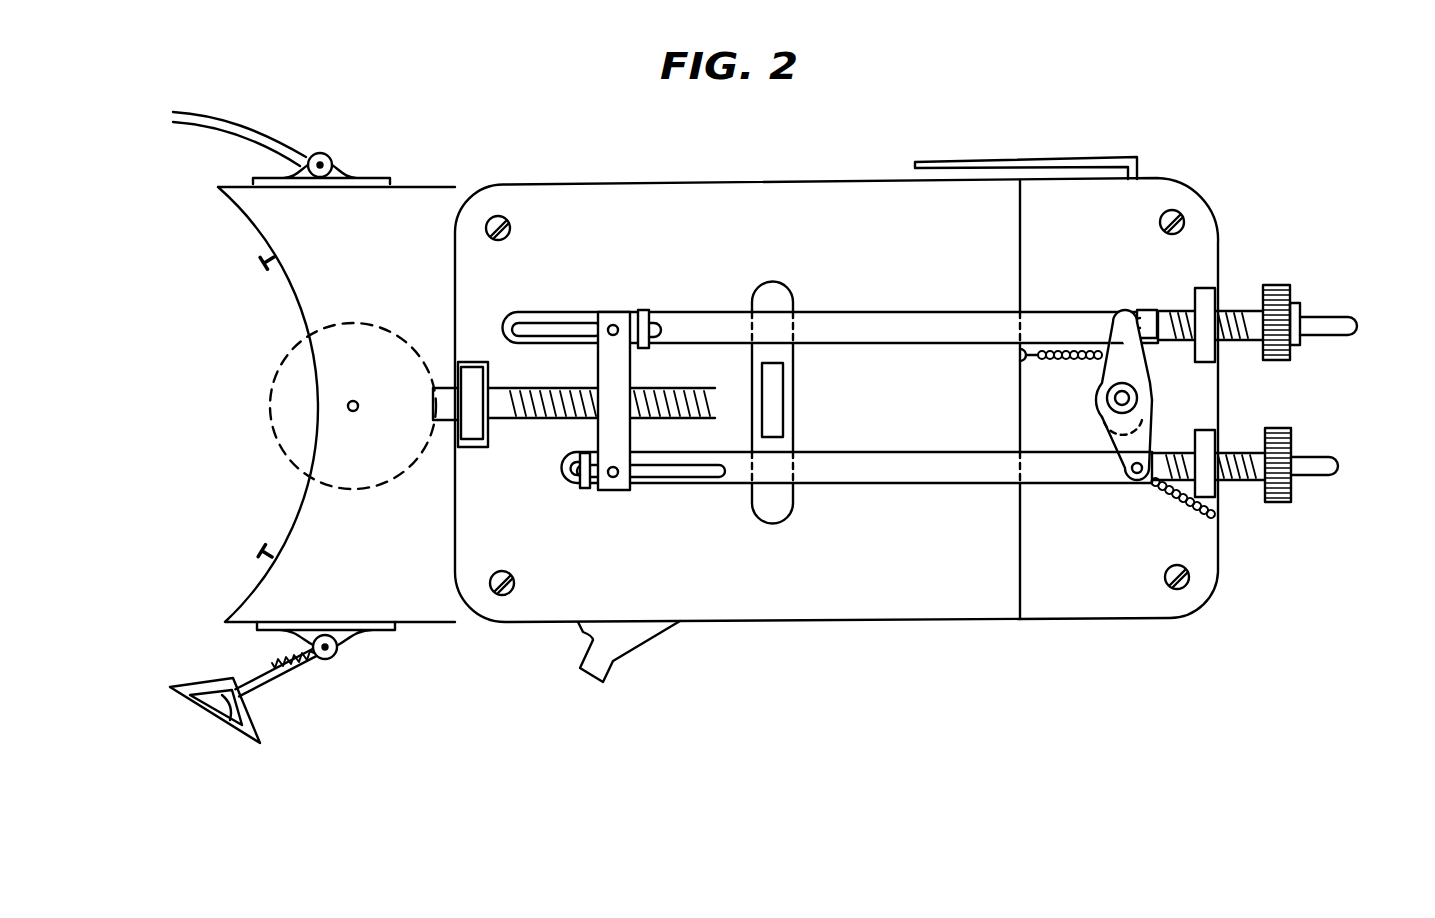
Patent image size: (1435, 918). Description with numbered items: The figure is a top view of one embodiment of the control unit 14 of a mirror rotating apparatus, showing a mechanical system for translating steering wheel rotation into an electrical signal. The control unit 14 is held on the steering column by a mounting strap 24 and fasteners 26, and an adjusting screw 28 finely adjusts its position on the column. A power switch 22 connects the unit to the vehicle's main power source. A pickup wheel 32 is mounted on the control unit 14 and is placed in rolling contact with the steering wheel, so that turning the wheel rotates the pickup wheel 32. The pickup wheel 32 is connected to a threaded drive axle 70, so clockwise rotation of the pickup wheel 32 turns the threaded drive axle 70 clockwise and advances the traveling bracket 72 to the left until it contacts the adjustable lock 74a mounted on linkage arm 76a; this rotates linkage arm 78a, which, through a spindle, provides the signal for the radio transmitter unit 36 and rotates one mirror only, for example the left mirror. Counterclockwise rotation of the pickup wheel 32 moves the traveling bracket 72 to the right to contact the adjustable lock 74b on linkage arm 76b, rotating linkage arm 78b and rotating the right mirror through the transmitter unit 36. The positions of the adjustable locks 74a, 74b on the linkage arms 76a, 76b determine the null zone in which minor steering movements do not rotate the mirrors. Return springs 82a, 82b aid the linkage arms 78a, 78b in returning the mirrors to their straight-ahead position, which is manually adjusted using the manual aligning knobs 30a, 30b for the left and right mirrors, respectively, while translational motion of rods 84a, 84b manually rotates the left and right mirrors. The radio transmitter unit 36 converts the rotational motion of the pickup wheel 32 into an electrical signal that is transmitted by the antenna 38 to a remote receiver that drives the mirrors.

The control unit 14 is at (783, 182).
The power switch 22 is at (613, 662).
The mounting strap 24 is at (267, 126).
The fasteners 26 is at (327, 158).
The adjusting screw 28 is at (270, 692).
The manual aligning knob 30a is at (1290, 498).
The manual aligning knob 30b is at (1275, 285).
The pickup wheel 32 is at (388, 346).
The radio transmitter unit 36 is at (1115, 600).
The antenna 38 is at (1051, 162).
The threaded drive axle 70 is at (519, 418).
The traveling bracket 72 is at (606, 432).
The adjustable lock 74a is at (585, 488).
The adjustable lock 74b is at (644, 312).
The linkage arm 76a is at (918, 452).
The linkage arm 76b is at (918, 312).
The linkage arm 78a is at (1137, 481).
The linkage arm 78b is at (1129, 310).
The return spring 82a is at (1196, 505).
The return spring 82b is at (1068, 362).
The rod 84a is at (1330, 458).
The rod 84b is at (1330, 318).